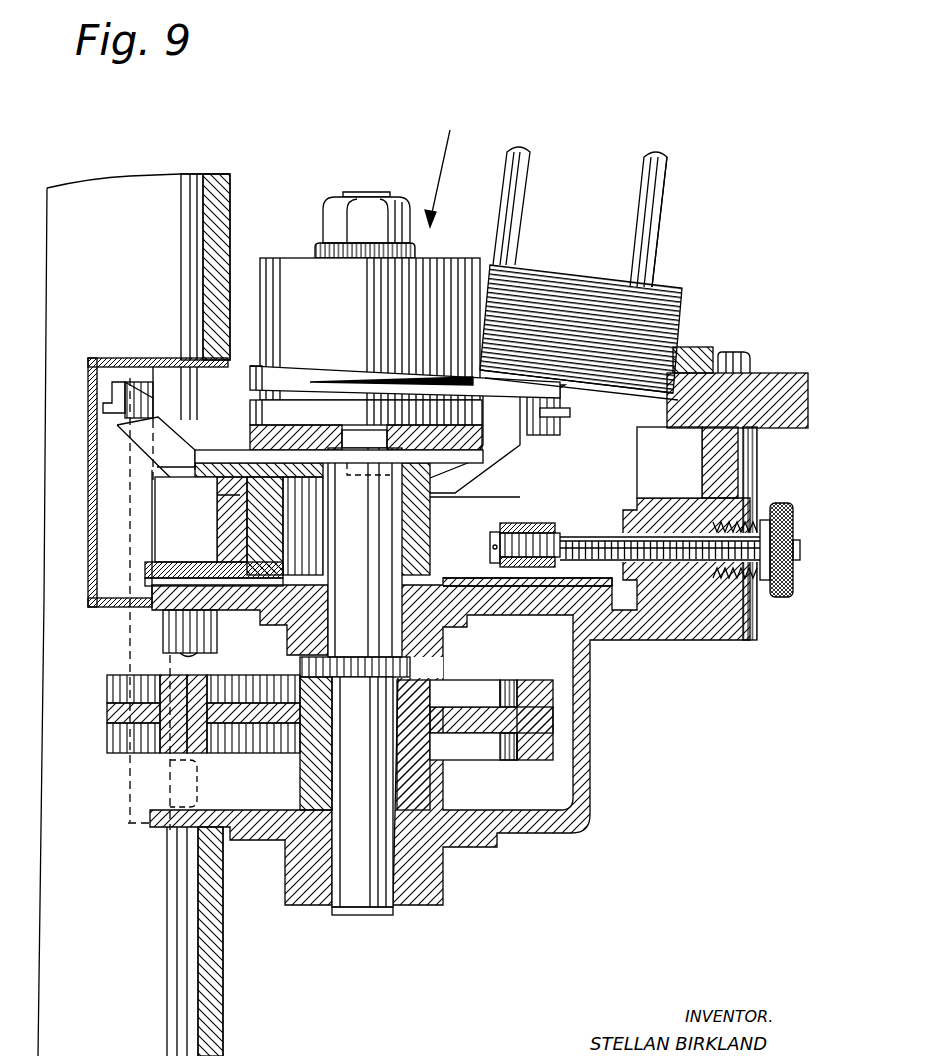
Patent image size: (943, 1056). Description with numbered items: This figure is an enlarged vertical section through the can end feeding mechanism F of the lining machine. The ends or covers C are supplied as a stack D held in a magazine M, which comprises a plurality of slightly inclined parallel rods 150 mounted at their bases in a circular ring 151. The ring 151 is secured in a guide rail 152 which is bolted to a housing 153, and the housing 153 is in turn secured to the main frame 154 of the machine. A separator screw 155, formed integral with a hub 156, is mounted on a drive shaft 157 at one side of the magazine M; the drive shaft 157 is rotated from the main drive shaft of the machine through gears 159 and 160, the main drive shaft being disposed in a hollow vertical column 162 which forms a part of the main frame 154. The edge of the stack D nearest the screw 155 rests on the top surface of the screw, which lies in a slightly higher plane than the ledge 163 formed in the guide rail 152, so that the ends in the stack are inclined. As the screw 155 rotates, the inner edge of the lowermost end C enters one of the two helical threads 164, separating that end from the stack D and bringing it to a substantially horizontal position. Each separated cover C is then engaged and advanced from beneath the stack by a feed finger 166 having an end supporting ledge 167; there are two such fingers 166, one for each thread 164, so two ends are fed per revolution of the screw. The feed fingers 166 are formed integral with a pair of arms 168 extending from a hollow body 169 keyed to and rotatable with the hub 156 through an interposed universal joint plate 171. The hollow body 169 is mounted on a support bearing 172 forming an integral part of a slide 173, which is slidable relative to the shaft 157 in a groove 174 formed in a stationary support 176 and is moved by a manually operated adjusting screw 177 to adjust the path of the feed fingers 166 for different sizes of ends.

The rods 150 is at (515, 195).
The circular ring 151 is at (690, 365).
The guide rail 152 is at (770, 380).
The housing 153 is at (693, 625).
The main frame 154 is at (208, 1025).
The separator screw 155 is at (250, 380).
The hub 156 is at (250, 430).
The drive shaft 157 is at (365, 197).
The gear 159 is at (120, 718).
The gear 160 is at (527, 750).
The hollow vertical column 162 is at (208, 970).
The ledge 163 is at (697, 403).
The helical thread 164 is at (350, 380).
The feed finger 166 is at (120, 398).
The end supporting ledge 167 is at (102, 400).
The arms 168 is at (167, 462).
The hollow body 169 is at (253, 515).
The universal joint plate 171 is at (207, 472).
The support bearing 172 is at (267, 533).
The slide 173 is at (183, 587).
The groove 174 is at (583, 570).
The stationary support 176 is at (483, 607).
The adjusting screw 177 is at (590, 540).
The end member or cover C is at (660, 292).
The stack D is at (682, 312).
The magazine M is at (657, 235).
The can end feeding mechanism F is at (444, 162).